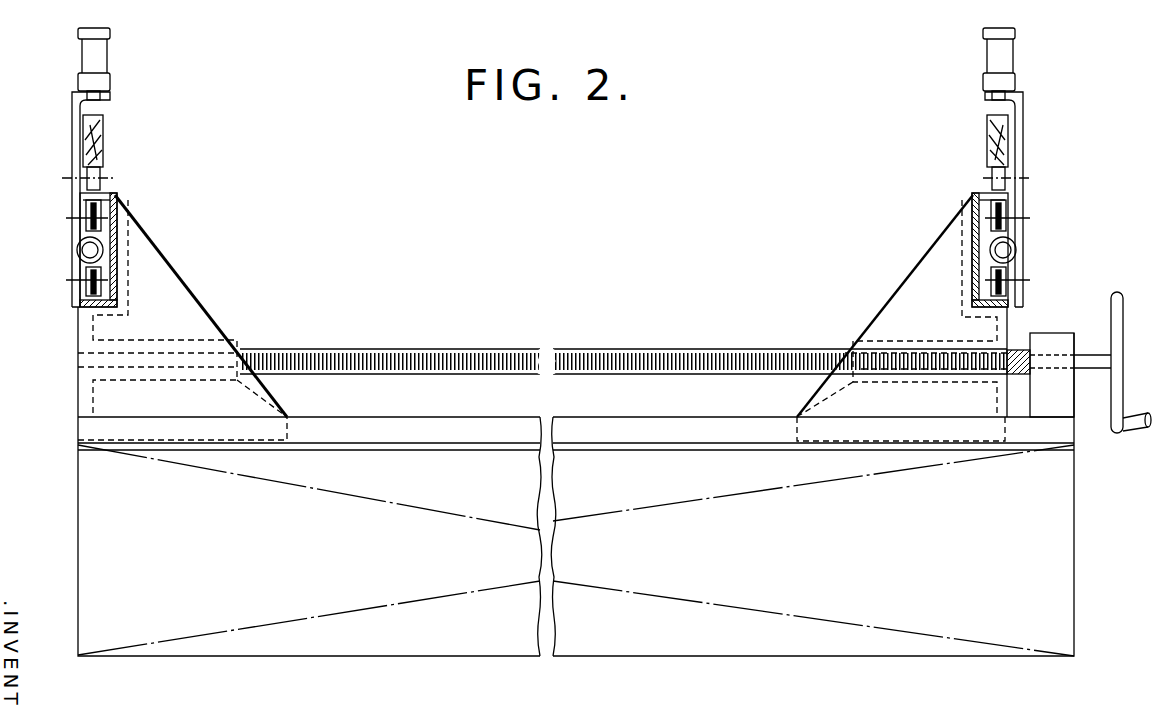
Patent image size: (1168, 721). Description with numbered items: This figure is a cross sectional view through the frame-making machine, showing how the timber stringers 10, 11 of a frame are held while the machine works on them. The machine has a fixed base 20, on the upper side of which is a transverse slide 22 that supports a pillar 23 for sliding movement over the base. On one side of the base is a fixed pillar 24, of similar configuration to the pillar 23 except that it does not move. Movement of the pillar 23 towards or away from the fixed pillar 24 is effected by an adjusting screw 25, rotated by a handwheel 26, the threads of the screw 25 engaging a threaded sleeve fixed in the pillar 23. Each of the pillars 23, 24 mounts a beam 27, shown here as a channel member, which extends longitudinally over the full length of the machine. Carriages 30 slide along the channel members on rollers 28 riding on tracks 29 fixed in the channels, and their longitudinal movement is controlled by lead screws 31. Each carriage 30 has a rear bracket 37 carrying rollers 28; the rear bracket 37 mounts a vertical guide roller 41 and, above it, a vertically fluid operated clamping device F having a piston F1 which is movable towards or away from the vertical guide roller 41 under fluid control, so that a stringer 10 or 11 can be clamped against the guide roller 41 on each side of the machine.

The stringer 10 is at (990, 131).
The stringer 11 is at (93, 135).
The fixed base 20 is at (1074, 558).
The transverse slide 22 is at (597, 430).
The pillar 23 is at (893, 327).
The fixed pillar 24 is at (177, 327).
The adjusting screw 25 is at (644, 352).
The handwheel 26 is at (1115, 322).
The beam 27 is at (117, 195).
The rollers 28 is at (101, 273).
The tracks 29 is at (110, 300).
The carriage 30 is at (70, 148).
The lead screw 31 is at (83, 251).
The rear bracket 37 is at (72, 106).
The vertical guide roller 41 is at (97, 178).
The fluid operated clamping device F is at (546, 59).
The piston F1 is at (98, 107).